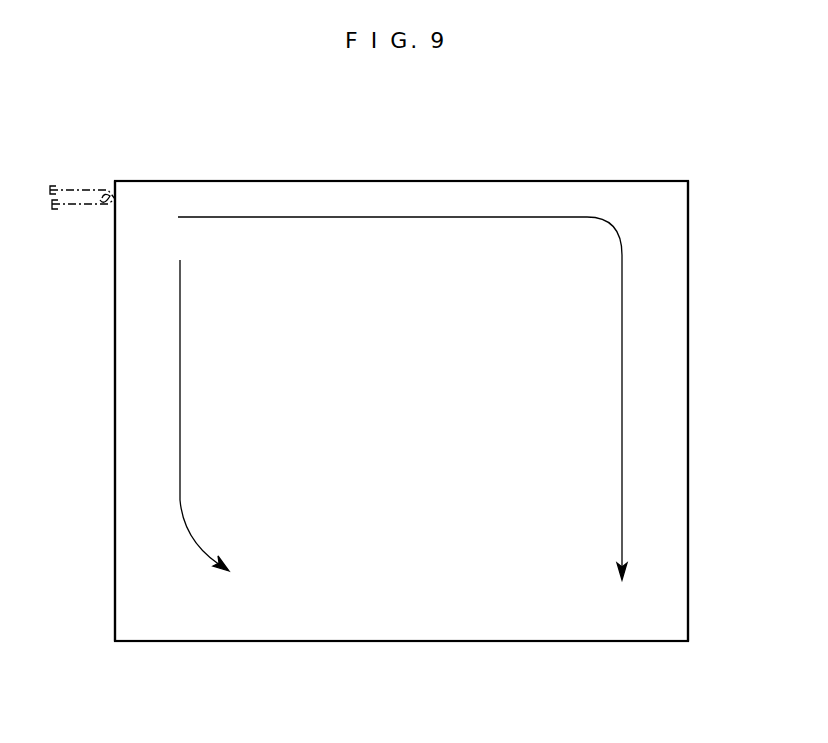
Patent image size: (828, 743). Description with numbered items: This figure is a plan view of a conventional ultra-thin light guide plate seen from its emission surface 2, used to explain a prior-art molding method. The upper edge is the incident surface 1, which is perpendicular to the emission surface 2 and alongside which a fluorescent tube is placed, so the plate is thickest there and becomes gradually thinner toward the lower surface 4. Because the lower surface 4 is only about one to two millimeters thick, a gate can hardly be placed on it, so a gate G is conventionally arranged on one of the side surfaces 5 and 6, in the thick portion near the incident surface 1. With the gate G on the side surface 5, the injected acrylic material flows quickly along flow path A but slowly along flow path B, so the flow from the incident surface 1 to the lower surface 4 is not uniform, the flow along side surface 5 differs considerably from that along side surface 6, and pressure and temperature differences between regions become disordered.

The incident surface 1 is at (391, 181).
The emission surface 2 is at (128, 483).
The lower surface 4 is at (371, 642).
The side surface 5 is at (114, 377).
The side surface 6 is at (689, 345).
The gate G is at (95, 232).
The flow path A is at (402, 398).
The flow path B is at (204, 415).